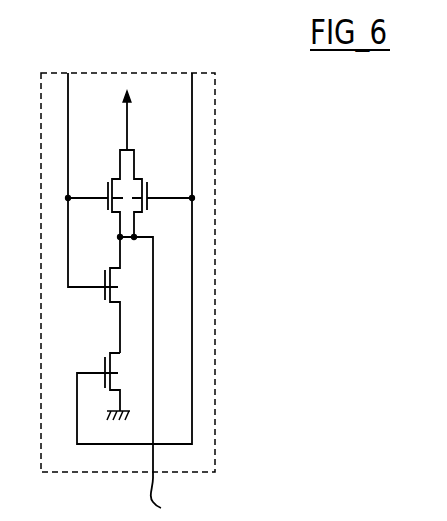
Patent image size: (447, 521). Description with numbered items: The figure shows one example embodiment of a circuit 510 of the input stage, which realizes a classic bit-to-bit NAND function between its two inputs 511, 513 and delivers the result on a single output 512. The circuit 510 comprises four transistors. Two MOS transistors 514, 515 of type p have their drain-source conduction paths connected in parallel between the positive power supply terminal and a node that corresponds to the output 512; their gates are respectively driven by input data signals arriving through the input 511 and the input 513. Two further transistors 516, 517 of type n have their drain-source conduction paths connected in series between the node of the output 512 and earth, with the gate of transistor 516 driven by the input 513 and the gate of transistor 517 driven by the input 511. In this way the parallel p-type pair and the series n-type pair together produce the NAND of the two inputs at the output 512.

The circuit 510 is at (215, 365).
The input 511 is at (192, 73).
The output 512 is at (165, 378).
The input 513 is at (68, 73).
The MOS transistor of type p 514 is at (169, 184).
The MOS transistor of type p 515 is at (88, 184).
The transistor of type n 516 is at (98, 295).
The transistor of type n 517 is at (126, 382).